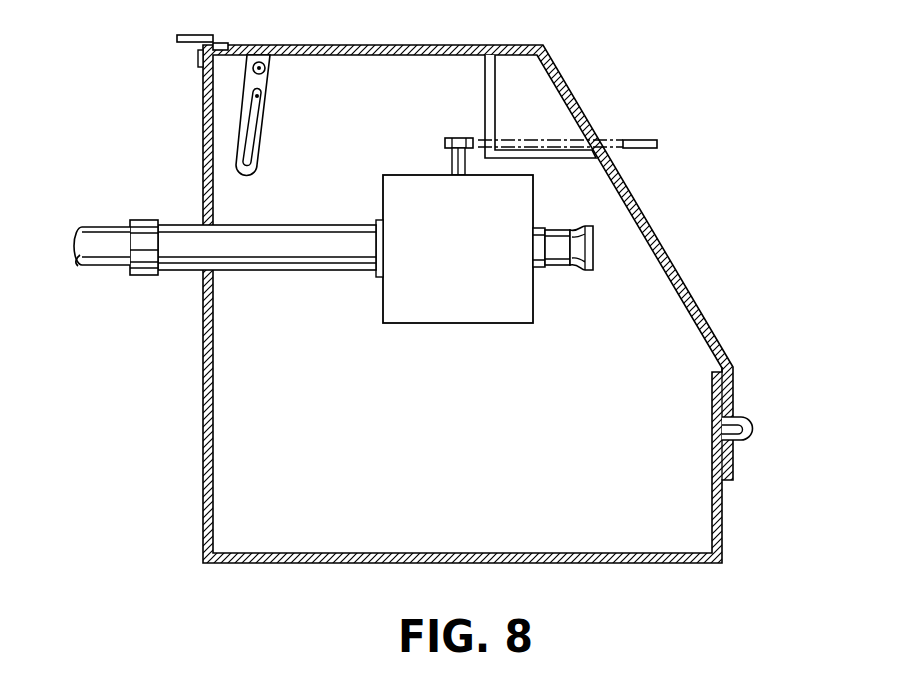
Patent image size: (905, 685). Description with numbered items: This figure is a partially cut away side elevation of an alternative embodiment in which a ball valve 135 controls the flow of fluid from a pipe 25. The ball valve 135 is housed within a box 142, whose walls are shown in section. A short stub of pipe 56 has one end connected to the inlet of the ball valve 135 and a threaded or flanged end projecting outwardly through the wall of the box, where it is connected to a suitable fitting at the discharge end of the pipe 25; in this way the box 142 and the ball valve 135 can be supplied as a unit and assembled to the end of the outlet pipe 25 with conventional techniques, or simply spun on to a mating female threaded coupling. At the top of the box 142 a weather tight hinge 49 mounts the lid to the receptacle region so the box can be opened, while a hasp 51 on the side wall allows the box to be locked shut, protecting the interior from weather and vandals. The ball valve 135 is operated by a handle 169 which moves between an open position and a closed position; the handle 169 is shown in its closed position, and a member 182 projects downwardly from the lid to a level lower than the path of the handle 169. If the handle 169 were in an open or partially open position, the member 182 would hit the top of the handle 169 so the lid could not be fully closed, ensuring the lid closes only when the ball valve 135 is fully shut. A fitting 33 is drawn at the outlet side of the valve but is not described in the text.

The pipe 25 is at (102, 240).
The stub of pipe 56 is at (183, 243).
The hinge 49 is at (200, 50).
The member 182 is at (485, 78).
The handle 169 is at (450, 138).
The box 142 is at (720, 262).
The fitting 33 is at (590, 263).
The ball valve 135 is at (457, 323).
The hasp 51 is at (752, 421).